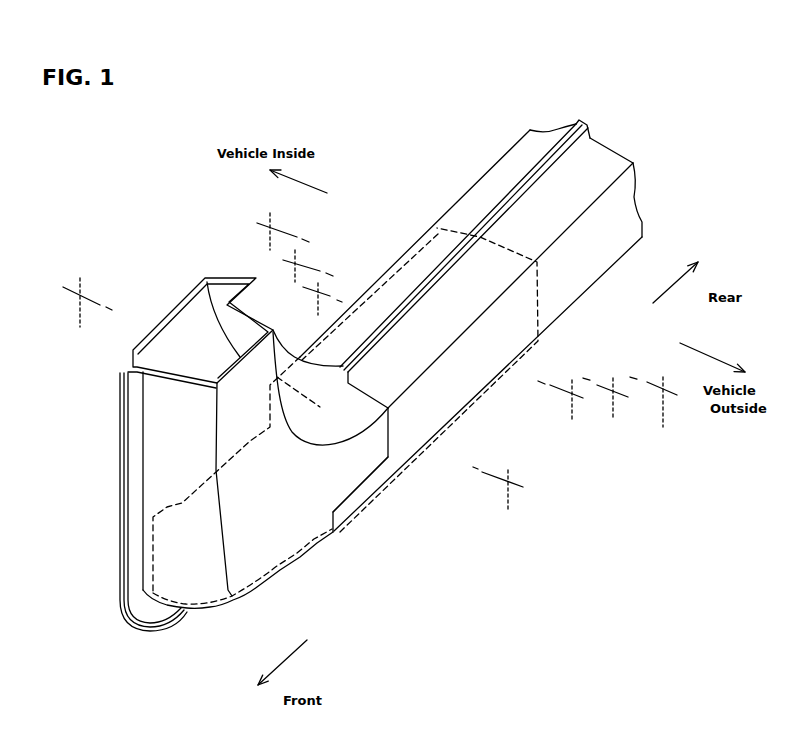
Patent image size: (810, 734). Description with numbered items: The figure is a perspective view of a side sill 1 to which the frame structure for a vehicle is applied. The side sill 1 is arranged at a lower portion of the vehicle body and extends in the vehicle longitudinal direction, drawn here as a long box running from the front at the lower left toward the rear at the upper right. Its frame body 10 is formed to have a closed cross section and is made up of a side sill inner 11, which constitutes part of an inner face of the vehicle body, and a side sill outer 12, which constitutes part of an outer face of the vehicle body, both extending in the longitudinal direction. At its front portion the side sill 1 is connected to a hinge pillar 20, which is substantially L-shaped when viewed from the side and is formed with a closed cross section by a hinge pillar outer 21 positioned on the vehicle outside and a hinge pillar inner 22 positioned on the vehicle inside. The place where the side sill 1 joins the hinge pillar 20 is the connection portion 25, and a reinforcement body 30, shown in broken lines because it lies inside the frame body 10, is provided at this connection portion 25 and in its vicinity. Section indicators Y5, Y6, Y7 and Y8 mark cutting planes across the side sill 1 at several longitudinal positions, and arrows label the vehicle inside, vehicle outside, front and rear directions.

The side sill 1 is at (445, 107).
The frame body 10 is at (625, 137).
The side sill inner 11 is at (477, 195).
The side sill outer 12 is at (632, 207).
The hinge pillar 20 is at (177, 293).
The hinge pillar outer 21 is at (283, 563).
The hinge pillar inner 22 is at (130, 357).
The connection portion 25 is at (337, 520).
The reinforcement body 30 is at (543, 303).
The section line Y5 is at (78, 297).
The section line Y6 is at (268, 227).
The section line Y7 is at (317, 293).
The section line Y8 is at (293, 260).